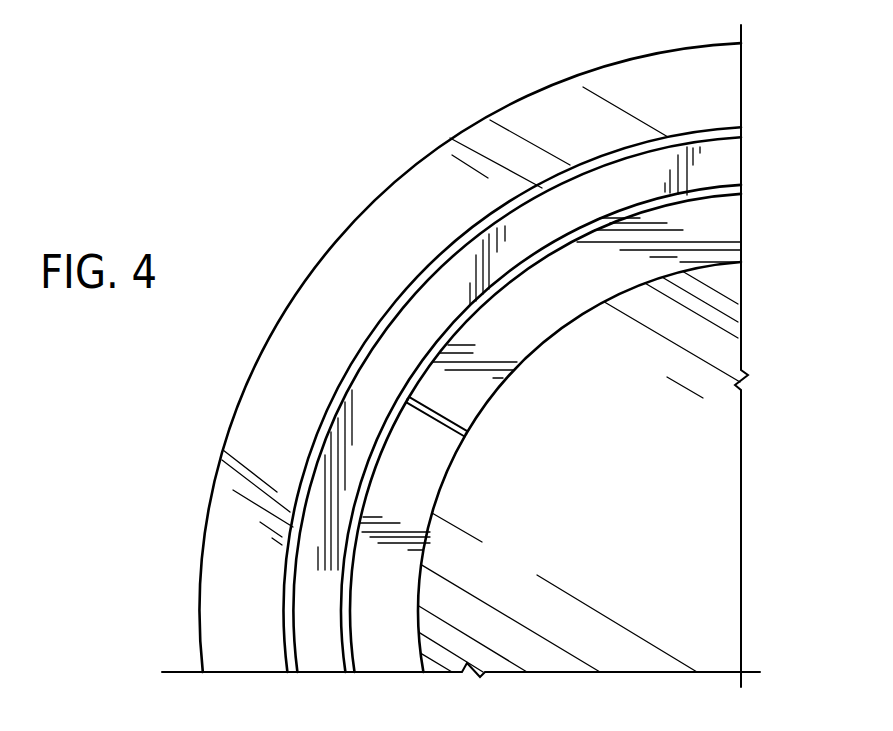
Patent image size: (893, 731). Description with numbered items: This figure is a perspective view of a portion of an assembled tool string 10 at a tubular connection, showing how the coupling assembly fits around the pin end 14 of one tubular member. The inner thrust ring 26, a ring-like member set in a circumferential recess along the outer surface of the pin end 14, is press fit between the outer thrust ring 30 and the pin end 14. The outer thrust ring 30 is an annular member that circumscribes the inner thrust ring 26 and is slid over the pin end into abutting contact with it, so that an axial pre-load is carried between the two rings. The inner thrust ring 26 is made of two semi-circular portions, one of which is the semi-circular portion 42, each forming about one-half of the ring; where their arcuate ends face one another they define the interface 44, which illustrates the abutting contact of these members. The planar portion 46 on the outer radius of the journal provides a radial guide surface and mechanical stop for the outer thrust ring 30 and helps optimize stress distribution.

The tool string 10 is at (264, 271).
The pin end 14 is at (650, 527).
The inner thrust ring 26 is at (442, 586).
The outer thrust ring 30 is at (341, 452).
The semi-circular portion 42 is at (372, 567).
The interface 44 is at (518, 323).
The planar portion 46 is at (438, 432).